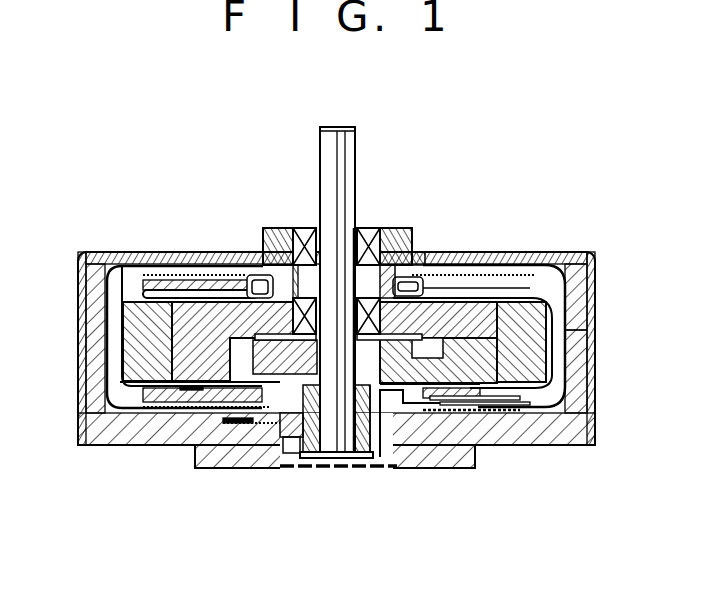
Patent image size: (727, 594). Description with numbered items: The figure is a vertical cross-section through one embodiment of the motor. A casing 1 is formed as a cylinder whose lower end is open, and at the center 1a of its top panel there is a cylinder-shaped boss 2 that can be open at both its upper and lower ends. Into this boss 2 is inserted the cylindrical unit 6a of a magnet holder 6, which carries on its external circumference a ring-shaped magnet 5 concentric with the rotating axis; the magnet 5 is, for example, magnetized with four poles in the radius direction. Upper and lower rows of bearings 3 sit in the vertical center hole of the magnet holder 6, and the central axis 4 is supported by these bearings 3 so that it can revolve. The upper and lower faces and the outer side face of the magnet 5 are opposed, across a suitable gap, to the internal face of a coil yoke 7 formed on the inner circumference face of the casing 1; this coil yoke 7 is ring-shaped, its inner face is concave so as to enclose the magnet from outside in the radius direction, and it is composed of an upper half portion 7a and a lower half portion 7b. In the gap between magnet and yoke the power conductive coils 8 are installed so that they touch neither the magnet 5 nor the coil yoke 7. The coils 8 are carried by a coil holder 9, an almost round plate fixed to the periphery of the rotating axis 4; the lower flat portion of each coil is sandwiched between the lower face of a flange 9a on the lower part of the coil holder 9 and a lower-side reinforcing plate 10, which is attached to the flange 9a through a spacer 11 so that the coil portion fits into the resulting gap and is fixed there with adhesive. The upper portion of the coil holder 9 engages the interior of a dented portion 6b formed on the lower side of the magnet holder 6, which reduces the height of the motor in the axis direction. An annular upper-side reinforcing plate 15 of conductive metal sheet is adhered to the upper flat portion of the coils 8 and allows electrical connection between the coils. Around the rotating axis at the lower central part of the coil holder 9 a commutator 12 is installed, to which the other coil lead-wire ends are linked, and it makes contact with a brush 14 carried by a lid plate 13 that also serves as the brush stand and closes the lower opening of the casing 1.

The casing 1 is at (584, 252).
The center of the top panel of the casing 1a is at (530, 252).
The boss 2 is at (407, 228).
The bearings 3 is at (290, 315).
The central axis 4 is at (358, 133).
The magnet 5 is at (562, 437).
The magnet holder 6 is at (487, 307).
The cylindrical unit of the magnet holder 6a is at (387, 228).
The dented portion 6b is at (198, 443).
The coil yoke 7 is at (590, 315).
The upper half portion of the coil yoke 7a is at (586, 290).
The lower half portion of the coil yoke 7b is at (587, 390).
The coils 8 is at (190, 257).
The coil holder 9 is at (410, 342).
The flange 9a is at (503, 405).
The lower-side reinforcing plate 10 is at (495, 400).
The spacer 11 is at (483, 395).
The commutator 12 is at (357, 473).
The lid plate 13 is at (240, 465).
The brush 14 is at (295, 470).
The upper-side reinforcing plate 15 is at (143, 265).